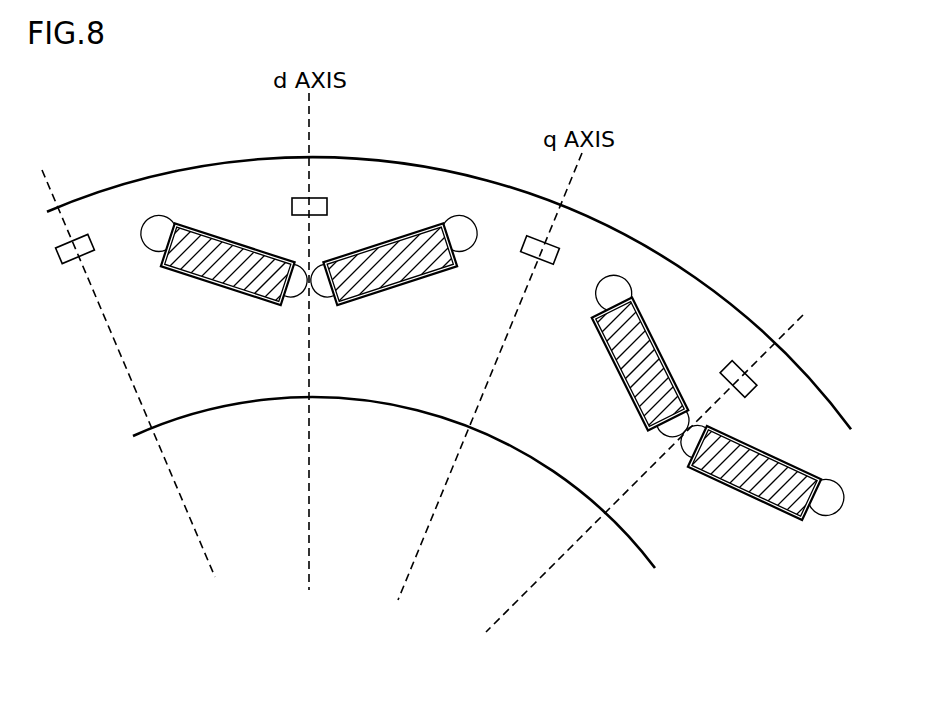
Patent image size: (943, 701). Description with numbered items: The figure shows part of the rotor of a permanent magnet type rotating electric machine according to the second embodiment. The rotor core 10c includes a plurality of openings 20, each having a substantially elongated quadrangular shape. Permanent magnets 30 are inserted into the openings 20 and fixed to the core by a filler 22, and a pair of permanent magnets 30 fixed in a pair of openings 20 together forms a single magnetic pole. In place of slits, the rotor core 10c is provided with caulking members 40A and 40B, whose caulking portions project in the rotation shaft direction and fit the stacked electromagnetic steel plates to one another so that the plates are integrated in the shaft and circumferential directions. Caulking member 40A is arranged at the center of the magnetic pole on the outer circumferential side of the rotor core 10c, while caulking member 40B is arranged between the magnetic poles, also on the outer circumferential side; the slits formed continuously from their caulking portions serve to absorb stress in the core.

The rotor core 10c is at (338, 375).
The opening 20 is at (433, 282).
The filler 22 is at (459, 228).
The permanent magnet 30 is at (398, 267).
The caulking member 40A is at (321, 198).
The caulking member 40B is at (545, 268).